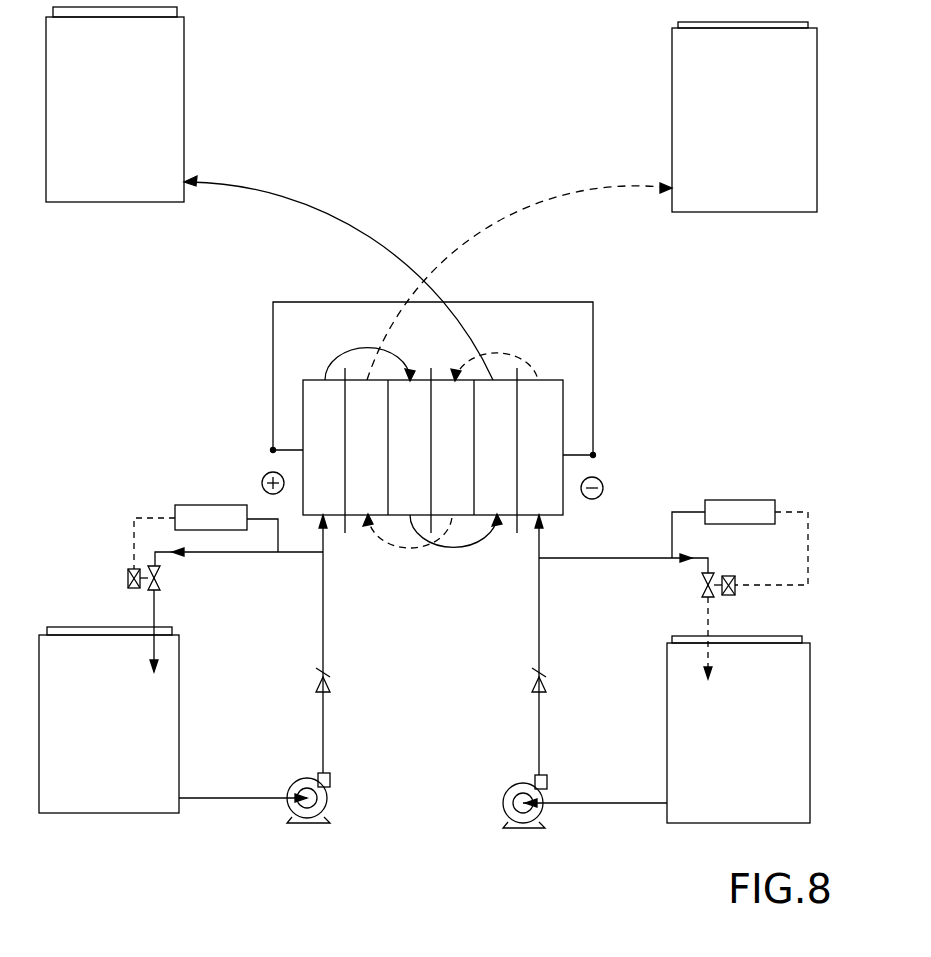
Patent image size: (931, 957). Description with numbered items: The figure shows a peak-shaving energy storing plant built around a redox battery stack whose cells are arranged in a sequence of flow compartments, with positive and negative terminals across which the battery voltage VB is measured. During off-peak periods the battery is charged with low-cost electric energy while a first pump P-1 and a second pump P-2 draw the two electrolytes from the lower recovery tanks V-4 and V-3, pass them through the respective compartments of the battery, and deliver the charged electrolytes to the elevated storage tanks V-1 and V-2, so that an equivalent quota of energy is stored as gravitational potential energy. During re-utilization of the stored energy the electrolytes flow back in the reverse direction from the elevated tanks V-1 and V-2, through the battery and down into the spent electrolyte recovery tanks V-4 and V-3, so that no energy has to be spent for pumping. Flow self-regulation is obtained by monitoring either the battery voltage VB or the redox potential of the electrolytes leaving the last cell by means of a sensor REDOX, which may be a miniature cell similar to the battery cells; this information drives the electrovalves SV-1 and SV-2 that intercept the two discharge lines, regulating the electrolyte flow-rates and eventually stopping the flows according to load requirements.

The charged electrolyte tank V-1 is at (115, 104).
The charged electrolyte tank V-2 is at (744, 117).
The spent electrolyte recovery tank V-3 is at (738, 729).
The spent electrolyte recovery tank V-4 is at (109, 720).
The battery voltage VB is at (428, 362).
The pump P-1 is at (254, 669).
The pump P-2 is at (581, 671).
The electrovalve SV-1 is at (201, 610).
The electrovalve SV-2 is at (637, 616).
The redox potential sensor REDOX is at (471, 542).